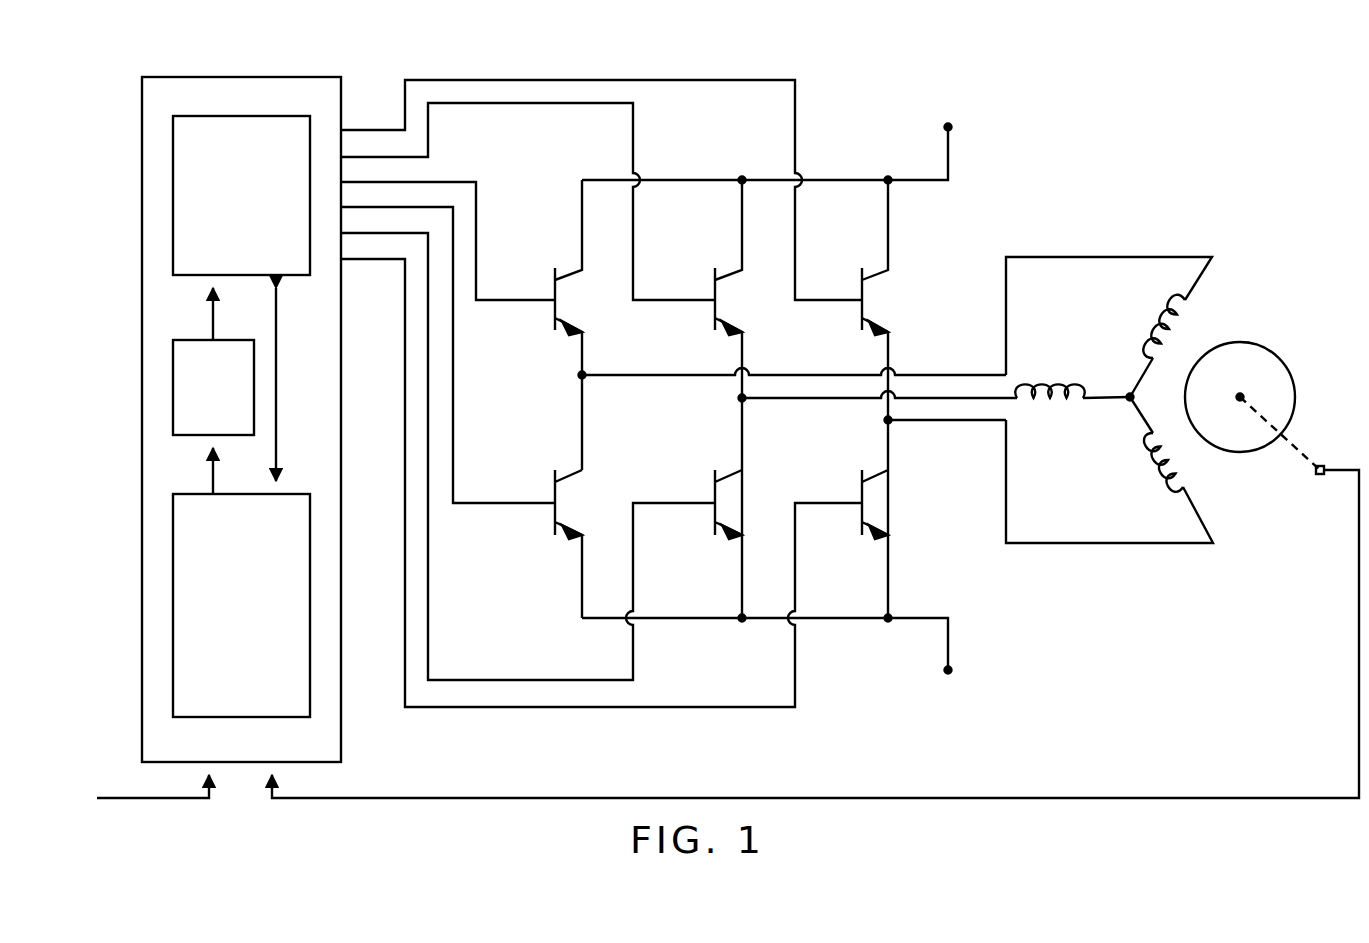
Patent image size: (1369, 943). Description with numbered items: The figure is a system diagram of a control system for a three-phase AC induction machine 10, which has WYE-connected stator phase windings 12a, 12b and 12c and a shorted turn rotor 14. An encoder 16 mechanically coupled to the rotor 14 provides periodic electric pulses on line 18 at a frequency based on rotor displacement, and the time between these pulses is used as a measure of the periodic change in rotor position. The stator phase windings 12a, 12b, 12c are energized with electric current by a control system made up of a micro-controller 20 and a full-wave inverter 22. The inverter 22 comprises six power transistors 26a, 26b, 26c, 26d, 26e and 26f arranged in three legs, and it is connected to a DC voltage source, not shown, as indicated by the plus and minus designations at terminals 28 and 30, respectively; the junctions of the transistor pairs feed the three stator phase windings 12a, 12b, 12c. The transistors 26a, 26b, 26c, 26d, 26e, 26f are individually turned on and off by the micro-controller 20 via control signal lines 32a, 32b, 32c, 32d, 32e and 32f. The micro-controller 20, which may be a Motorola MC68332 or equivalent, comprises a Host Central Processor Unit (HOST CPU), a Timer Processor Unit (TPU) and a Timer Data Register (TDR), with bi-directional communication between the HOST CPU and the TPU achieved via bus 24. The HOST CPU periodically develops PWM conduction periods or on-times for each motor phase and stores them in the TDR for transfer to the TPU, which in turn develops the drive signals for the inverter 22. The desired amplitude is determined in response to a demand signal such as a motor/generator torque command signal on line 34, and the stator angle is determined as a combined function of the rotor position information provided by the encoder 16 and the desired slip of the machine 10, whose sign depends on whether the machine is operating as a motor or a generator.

The three-phase AC induction machine 10 is at (1172, 210).
The stator phase winding 12a is at (1148, 350).
The stator phase winding 12b is at (1030, 403).
The stator phase winding 12c is at (1168, 470).
The shorted turn rotor 14 is at (1256, 357).
The encoder 16 is at (1322, 478).
The line 18 is at (1359, 720).
The micro-controller 20 is at (278, 82).
The full-wave inverter 22 is at (672, 60).
The bus 24 is at (278, 420).
The power transistor 26a is at (555, 280).
The power transistor 26b is at (555, 492).
The power transistor 26c is at (712, 285).
The power transistor 26d is at (715, 492).
The power transistor 26e is at (858, 283).
The power transistor 26f is at (862, 490).
The terminal 28 is at (948, 127).
The terminal 30 is at (948, 670).
The control signal line 32a is at (513, 300).
The control signal line 32b is at (507, 503).
The control signal line 32c is at (510, 103).
The control signal line 32d is at (633, 645).
The control signal line 32e is at (693, 80).
The control signal line 32f is at (680, 707).
The line 34 is at (124, 798).